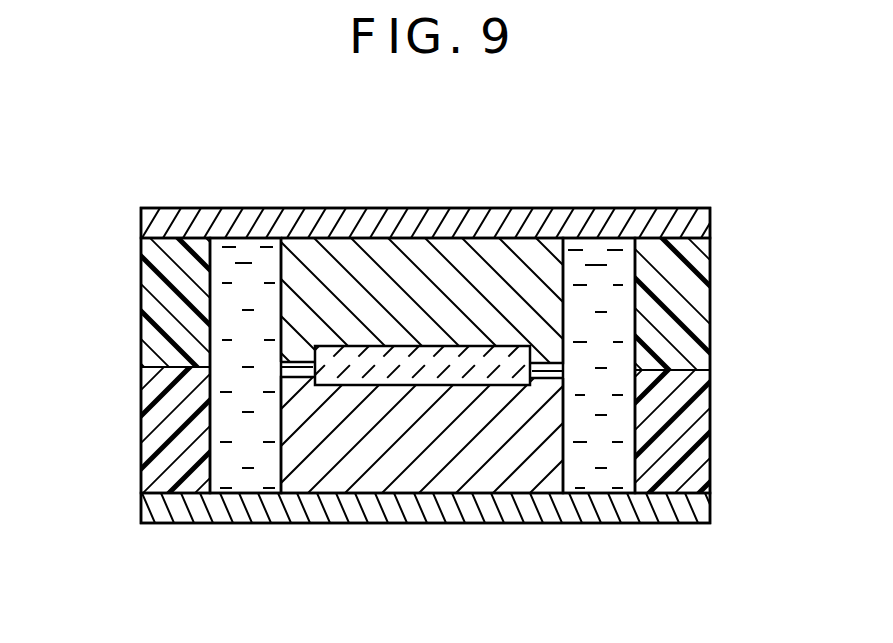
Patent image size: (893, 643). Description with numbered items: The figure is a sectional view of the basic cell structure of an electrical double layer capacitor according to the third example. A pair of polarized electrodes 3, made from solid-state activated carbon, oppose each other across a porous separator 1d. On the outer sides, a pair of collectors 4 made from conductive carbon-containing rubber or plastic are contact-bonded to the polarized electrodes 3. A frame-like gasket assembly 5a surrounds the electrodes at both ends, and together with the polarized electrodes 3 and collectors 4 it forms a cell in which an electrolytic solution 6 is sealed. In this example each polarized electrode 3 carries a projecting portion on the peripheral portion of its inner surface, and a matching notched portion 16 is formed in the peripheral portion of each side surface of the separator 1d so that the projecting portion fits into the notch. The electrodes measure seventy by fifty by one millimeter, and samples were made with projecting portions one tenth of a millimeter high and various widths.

The polarized electrode 3 is at (390, 255).
The collector 4 is at (655, 222).
The gasket assembly 5a is at (693, 302).
The electrolytic solution 6 is at (239, 246).
The notched portion 16 is at (290, 362).
The separator 1d is at (528, 372).